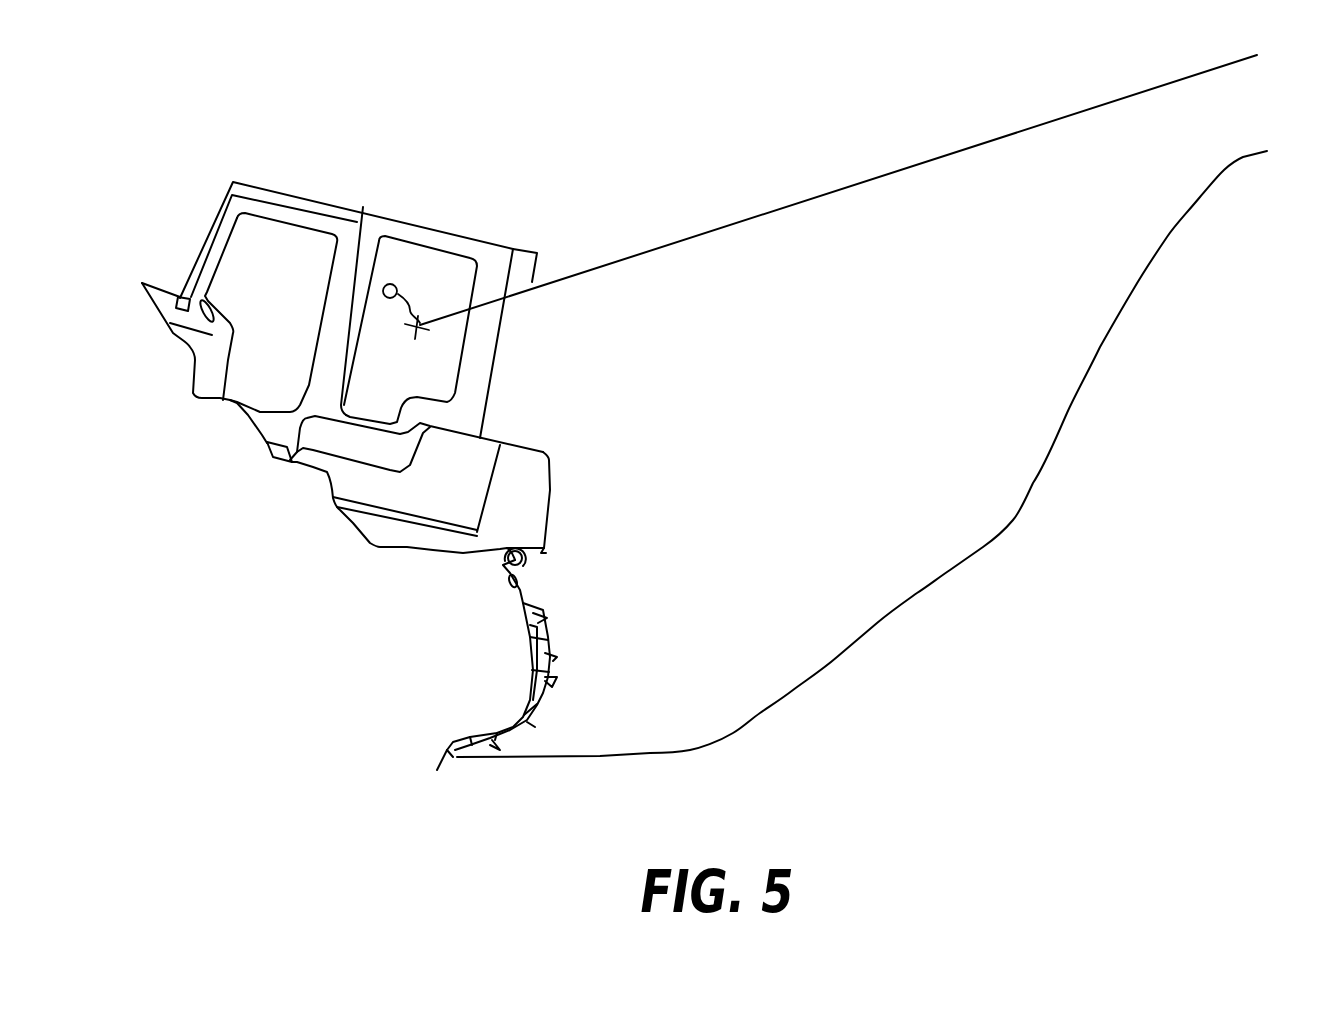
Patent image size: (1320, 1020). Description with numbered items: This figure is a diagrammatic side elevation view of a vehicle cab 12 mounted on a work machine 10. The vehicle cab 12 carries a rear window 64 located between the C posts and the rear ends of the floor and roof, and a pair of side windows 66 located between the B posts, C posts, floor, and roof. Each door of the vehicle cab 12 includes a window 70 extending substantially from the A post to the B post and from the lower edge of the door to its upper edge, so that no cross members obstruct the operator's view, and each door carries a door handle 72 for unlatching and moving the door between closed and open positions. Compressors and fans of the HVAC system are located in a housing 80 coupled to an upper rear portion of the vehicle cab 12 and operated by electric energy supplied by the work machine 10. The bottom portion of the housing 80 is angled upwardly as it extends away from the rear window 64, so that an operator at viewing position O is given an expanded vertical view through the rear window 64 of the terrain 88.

The work machine 10 is at (333, 170).
The vehicle cab 12 is at (378, 210).
The rear window 64 is at (503, 327).
The side windows 66 is at (440, 390).
The window 70 is at (255, 267).
The door handle 72 is at (180, 295).
The housing 80 is at (523, 251).
The terrain 88 is at (1174, 452).